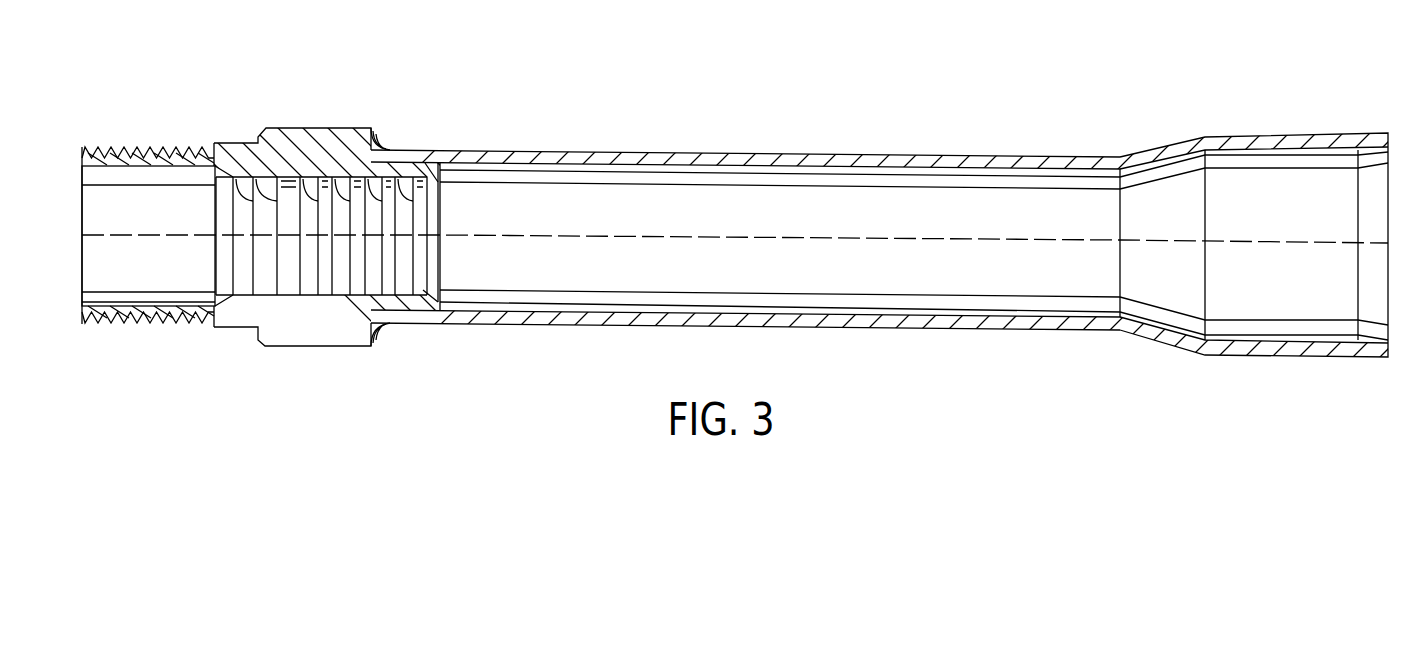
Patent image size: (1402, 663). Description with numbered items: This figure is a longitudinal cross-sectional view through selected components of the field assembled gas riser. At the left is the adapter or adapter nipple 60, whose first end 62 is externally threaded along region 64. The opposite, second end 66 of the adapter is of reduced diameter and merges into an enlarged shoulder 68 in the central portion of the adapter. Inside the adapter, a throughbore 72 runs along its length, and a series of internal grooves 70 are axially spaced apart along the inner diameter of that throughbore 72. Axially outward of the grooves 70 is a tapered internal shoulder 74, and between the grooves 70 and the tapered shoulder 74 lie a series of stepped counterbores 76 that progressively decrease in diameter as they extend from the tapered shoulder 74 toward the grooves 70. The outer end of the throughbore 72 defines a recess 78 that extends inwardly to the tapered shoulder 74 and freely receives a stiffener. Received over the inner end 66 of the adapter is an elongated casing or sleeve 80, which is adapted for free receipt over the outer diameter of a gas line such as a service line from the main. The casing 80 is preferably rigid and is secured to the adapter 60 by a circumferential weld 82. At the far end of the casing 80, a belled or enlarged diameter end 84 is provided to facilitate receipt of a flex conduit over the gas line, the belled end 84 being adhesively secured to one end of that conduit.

The adapter nipple 60 is at (393, 224).
The first end 62 is at (76, 273).
The externally threaded region 64 is at (157, 145).
The second end 66 is at (405, 300).
The enlarged shoulder 68 is at (307, 332).
The internal grooves 70 is at (280, 200).
The throughbore 72 is at (138, 170).
The tapered internal shoulder 74 is at (217, 290).
The stepped counterbores 76 is at (240, 182).
The recess 78 is at (147, 308).
The casing or sleeve 80 is at (778, 153).
The circumferential weld 82 is at (385, 147).
The belled end 84 is at (1238, 137).